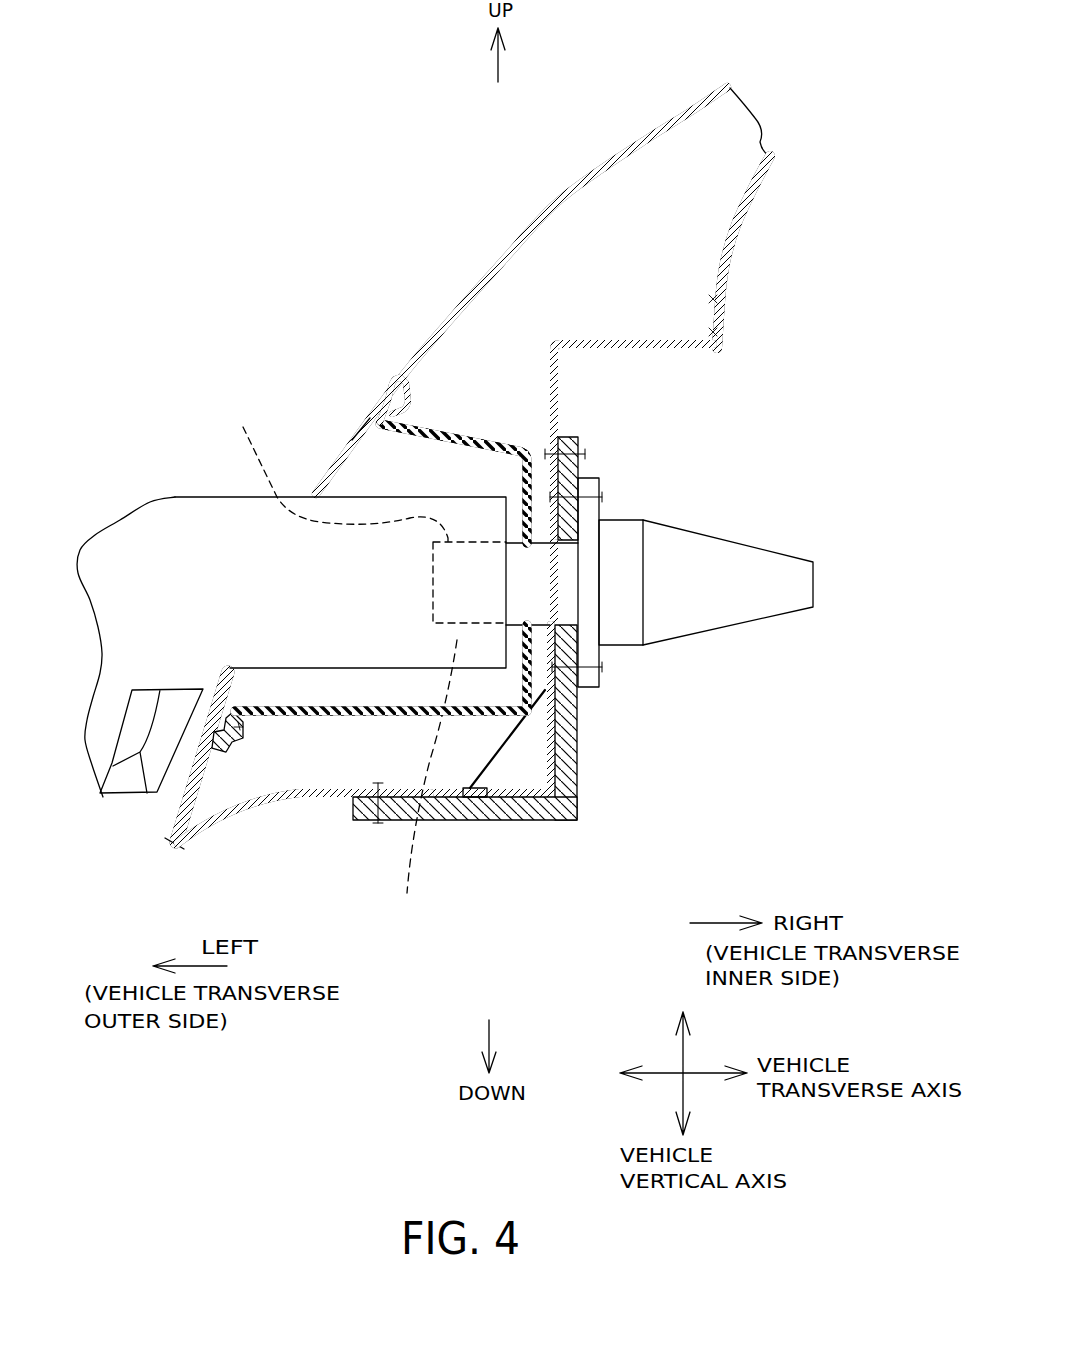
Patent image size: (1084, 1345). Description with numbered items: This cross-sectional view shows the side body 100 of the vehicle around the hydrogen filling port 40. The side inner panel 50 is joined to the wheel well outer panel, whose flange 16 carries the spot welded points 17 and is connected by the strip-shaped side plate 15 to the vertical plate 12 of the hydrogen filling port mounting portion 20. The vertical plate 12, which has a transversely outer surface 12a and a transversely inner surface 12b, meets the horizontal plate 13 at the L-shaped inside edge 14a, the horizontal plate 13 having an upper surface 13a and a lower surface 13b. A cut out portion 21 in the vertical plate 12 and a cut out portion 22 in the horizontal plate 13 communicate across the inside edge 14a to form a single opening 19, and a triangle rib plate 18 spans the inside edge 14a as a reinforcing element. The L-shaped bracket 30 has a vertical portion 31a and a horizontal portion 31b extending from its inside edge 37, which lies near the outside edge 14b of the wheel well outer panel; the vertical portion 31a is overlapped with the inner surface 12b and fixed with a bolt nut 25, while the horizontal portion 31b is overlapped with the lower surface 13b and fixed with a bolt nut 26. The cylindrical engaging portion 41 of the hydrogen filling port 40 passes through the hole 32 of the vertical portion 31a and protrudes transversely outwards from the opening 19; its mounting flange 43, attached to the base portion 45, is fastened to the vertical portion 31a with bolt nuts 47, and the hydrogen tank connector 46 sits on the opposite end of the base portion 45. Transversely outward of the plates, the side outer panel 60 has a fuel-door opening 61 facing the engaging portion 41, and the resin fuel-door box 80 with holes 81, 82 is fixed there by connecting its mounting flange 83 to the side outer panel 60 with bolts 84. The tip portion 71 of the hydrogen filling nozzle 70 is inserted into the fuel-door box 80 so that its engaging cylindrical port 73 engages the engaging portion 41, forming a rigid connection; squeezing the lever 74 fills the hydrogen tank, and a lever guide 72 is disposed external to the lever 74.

The side body 100 is at (472, 488).
The side outer panel 60 is at (511, 289).
The fuel-door opening 61 is at (365, 430).
The hydrogen filling port mounting portion 20 is at (738, 207).
The cut out portion 21 is at (580, 338).
The side inner panel 50 is at (760, 192).
The side plate 15 is at (627, 340).
The flange 16 is at (710, 308).
The spot welded points 17 is at (713, 300).
The vertical plate 12 is at (685, 478).
The transversely outer surface 12a is at (633, 443).
The transversely inner surface 12b is at (560, 410).
The horizontal plate 13 is at (244, 786).
The upper surface 13a is at (196, 760).
The lower surface 13b is at (334, 797).
The inside edge 14a is at (530, 812).
The outside edge 14b is at (575, 792).
The rib plate 18 is at (443, 825).
The opening 19 is at (553, 750).
The cut out portion 22 is at (483, 820).
The bolt nut 25 is at (580, 450).
The bolt nut 26 is at (383, 805).
The L-shaped bracket 30 is at (588, 671).
The vertical portion 31a is at (580, 723).
The horizontal portion 31b is at (520, 815).
The hole 32 is at (600, 527).
The inside edge 37 is at (664, 816).
The hydrogen filling port 40 is at (703, 550).
The engaging portion 41 is at (447, 734).
The mounting flange 43 is at (600, 682).
The base portion 45 is at (623, 557).
The hydrogen tank connector 46 is at (732, 590).
The bolt nuts 47 is at (603, 503).
The hydrogen filling nozzle 70 is at (274, 634).
The tip portion 71 is at (385, 497).
The lever guide 72 is at (153, 797).
The engaging cylindrical port 73 is at (337, 472).
The lever 74 is at (127, 797).
The fuel-door box 80 is at (381, 461).
The hole 81 is at (392, 445).
The hole 82 is at (586, 455).
The mounting flange 83 is at (387, 383).
The bolts 84 is at (380, 397).